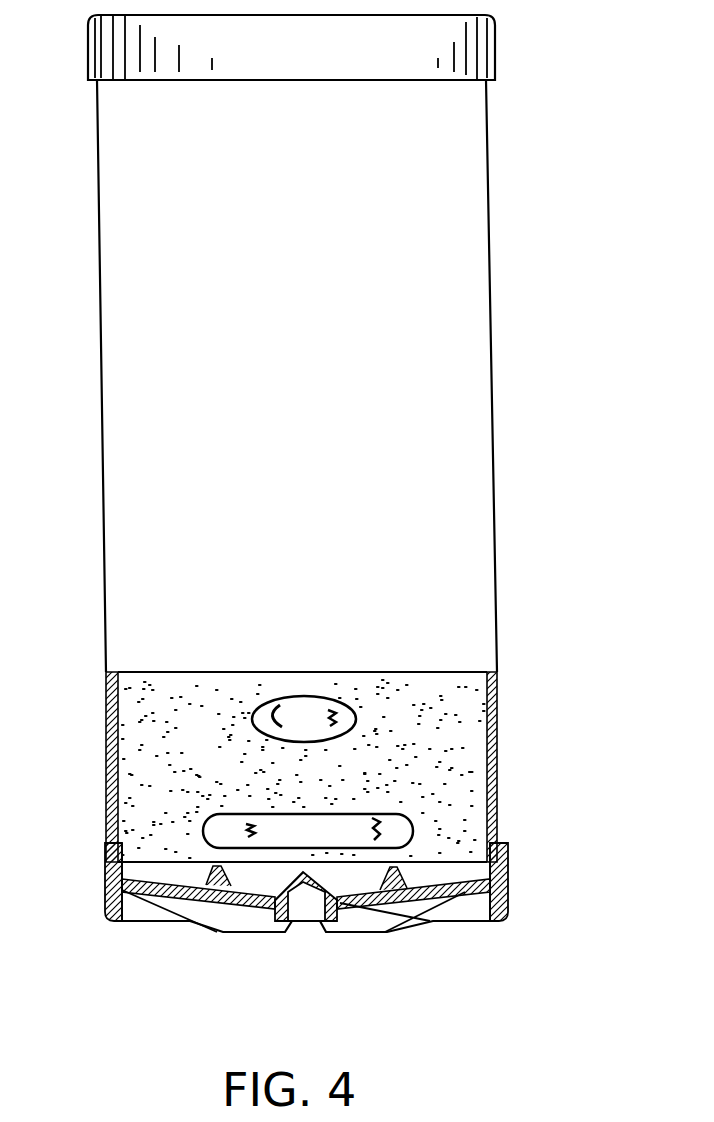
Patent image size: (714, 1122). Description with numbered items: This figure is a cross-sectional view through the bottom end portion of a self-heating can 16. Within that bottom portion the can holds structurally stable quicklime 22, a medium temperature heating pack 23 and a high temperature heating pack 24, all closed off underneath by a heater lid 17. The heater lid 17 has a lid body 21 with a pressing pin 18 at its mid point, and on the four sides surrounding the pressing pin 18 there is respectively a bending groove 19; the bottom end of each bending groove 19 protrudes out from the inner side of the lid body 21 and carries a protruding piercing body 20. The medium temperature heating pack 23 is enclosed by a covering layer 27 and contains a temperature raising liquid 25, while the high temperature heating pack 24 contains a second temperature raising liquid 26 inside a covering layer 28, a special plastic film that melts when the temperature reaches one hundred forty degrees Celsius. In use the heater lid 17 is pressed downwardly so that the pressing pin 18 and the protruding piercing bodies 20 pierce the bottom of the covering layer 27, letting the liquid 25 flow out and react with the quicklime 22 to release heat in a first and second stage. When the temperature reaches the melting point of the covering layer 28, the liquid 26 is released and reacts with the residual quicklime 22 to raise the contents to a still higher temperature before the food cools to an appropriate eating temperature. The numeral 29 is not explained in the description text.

The can 16 is at (101, 385).
The heater lid 17 is at (470, 908).
The pressing pin 18 is at (302, 902).
The bending groove 19 is at (200, 928).
The protruding piercing body 20 is at (193, 890).
The lid body 21 is at (340, 900).
The quicklime 22 is at (132, 767).
The medium temperature heating pack 23 is at (397, 828).
The high temperature heating pack 24 is at (265, 697).
The temperature raising liquid 25 is at (399, 821).
The temperature raising liquid 26 is at (305, 710).
The covering layer 27 is at (203, 836).
The covering layer 28 is at (340, 697).
The inner container 29 is at (143, 672).